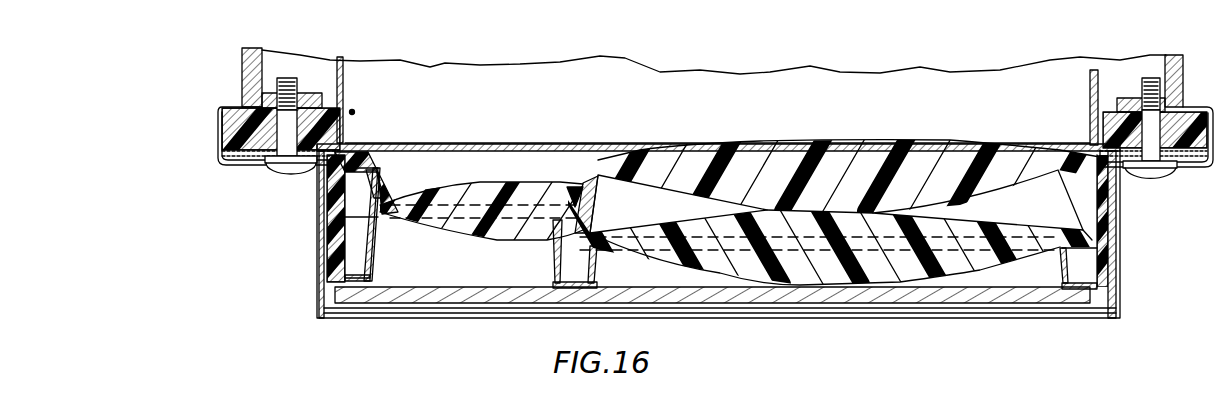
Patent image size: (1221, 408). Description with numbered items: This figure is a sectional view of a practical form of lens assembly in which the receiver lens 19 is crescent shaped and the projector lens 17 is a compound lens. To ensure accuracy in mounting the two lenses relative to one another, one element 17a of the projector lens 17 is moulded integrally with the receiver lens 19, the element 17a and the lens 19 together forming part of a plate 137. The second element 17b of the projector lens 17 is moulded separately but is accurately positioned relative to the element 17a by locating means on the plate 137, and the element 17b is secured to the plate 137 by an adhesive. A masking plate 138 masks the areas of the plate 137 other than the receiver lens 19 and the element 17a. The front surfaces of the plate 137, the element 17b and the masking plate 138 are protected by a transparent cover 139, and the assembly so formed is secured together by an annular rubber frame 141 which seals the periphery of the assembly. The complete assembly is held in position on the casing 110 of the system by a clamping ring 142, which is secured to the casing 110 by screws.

The casing 110 is at (226, 103).
The plate 137 is at (378, 170).
The receiver lens 19 is at (492, 194).
The element of the projector lens 17a is at (807, 148).
The projector lens 17 is at (834, 214).
The clamping ring 142 is at (318, 208).
The annular rubber frame 141 is at (322, 262).
The masking plate 138 is at (1068, 267).
The transparent cover 139 is at (735, 290).
The second element of the projector lens 17b is at (900, 266).